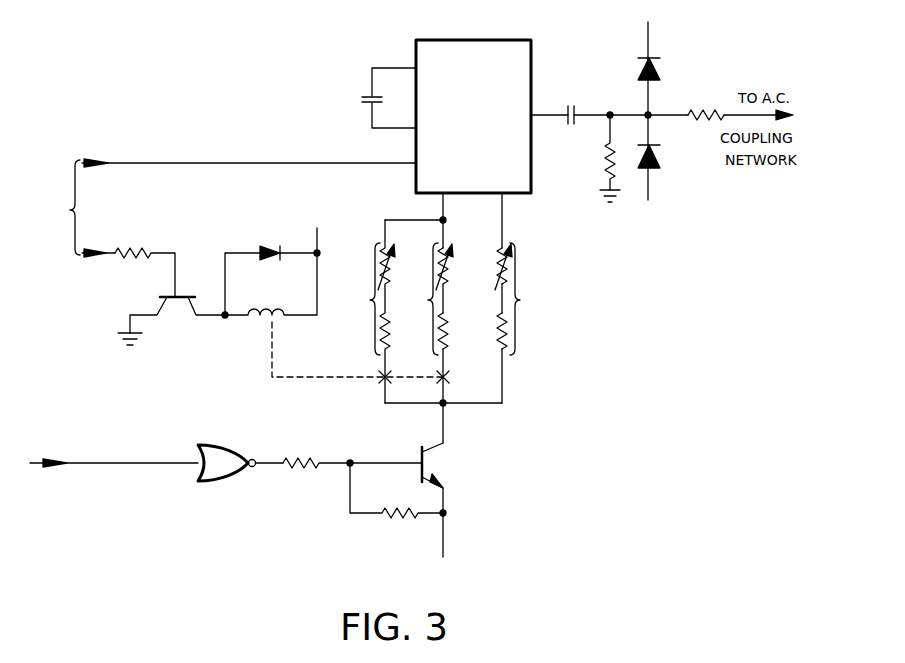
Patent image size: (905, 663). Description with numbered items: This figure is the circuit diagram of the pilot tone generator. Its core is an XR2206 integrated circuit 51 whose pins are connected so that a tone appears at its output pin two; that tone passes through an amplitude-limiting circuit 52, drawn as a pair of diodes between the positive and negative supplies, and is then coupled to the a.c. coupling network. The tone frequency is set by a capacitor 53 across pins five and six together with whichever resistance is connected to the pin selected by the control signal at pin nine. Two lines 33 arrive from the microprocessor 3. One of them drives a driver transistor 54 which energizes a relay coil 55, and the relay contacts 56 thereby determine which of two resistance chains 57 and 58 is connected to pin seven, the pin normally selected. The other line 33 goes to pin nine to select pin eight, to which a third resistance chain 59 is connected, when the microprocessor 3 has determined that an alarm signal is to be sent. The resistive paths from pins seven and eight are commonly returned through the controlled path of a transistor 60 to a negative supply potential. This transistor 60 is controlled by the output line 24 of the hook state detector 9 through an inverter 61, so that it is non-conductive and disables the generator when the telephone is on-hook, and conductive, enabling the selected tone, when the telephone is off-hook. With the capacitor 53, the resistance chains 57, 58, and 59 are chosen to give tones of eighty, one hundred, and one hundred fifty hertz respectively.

The microprocessor 3 is at (174, 209).
The hook state detector 9 is at (103, 474).
The output line of the hook state detector 24 is at (114, 443).
The lines from the microprocessor 33 is at (228, 208).
The XR2206 integrated circuit 51 is at (493, 116).
The amplitude-limiting circuit 52 is at (672, 109).
The capacitor 53 is at (366, 98).
The driver transistor 54 is at (170, 304).
The relay coil 55 is at (276, 290).
The relay contacts 56 is at (360, 365).
The resistance chain 57 is at (368, 311).
The resistance chain 58 is at (425, 299).
The resistance chain 59 is at (523, 299).
The transistor 60 is at (382, 505).
The inverter 61 is at (240, 481).